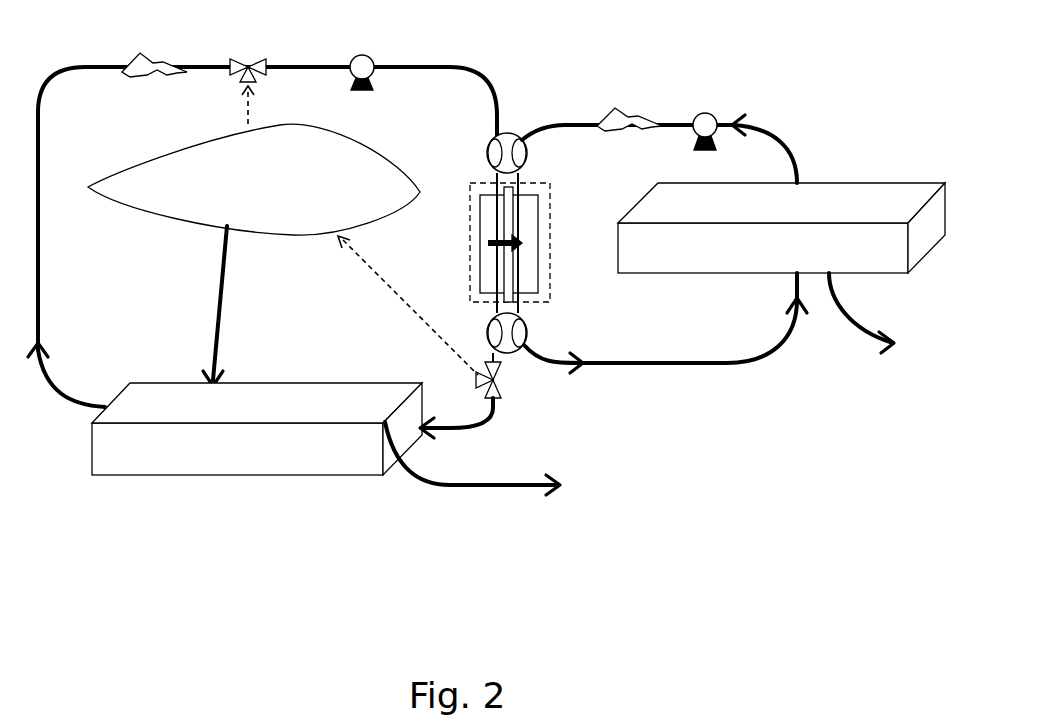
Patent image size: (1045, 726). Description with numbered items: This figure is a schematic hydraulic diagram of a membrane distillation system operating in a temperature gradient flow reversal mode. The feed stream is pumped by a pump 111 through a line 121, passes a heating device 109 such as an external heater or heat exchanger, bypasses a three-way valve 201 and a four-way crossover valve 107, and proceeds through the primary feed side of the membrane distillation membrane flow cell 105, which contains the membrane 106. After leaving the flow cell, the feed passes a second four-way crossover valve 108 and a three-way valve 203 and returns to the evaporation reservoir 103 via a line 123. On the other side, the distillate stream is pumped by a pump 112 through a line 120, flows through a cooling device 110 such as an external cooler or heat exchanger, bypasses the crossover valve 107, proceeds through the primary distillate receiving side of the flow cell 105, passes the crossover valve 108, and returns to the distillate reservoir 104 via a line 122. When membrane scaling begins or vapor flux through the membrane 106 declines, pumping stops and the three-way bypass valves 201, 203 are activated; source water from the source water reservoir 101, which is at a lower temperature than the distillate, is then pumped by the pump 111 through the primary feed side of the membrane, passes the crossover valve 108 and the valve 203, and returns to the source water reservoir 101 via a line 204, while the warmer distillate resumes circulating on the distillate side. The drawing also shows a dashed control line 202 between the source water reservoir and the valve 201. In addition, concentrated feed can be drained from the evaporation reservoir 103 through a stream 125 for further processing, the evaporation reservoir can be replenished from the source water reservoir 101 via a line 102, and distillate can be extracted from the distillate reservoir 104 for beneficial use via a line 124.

The source water reservoir 101 is at (133, 195).
The line 102 is at (222, 350).
The evaporation reservoir 103 is at (183, 477).
The distillate reservoir 104 is at (875, 187).
The membrane distillation membrane flow cell 105 is at (548, 183).
The membrane 106 is at (513, 225).
The 4-way crossover valve 107 is at (515, 132).
The 4-way crossover valve 108 is at (490, 322).
The heating device 109 is at (122, 57).
The cooling device 110 is at (645, 110).
The pump 111 is at (352, 62).
The pump 112 is at (718, 118).
The line 120 is at (787, 148).
The line 121 is at (42, 238).
The line 122 is at (620, 367).
The line 123 is at (448, 432).
The line 124 is at (835, 290).
The stream 125 is at (510, 490).
The 3-way valve 201 is at (214, 57).
The control signal line 202 is at (243, 118).
The 3-way valve 203 is at (505, 385).
The line 204 is at (372, 278).